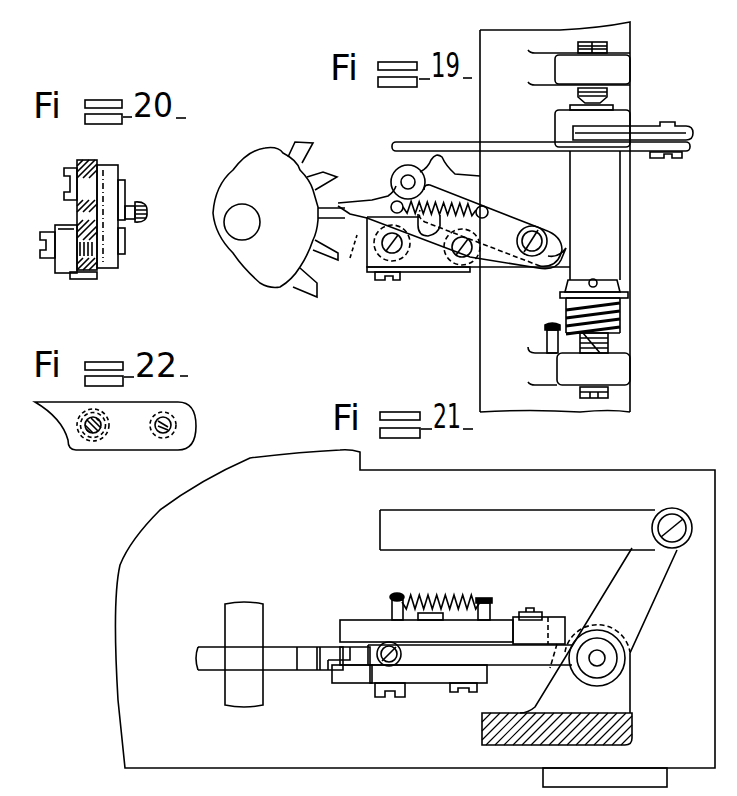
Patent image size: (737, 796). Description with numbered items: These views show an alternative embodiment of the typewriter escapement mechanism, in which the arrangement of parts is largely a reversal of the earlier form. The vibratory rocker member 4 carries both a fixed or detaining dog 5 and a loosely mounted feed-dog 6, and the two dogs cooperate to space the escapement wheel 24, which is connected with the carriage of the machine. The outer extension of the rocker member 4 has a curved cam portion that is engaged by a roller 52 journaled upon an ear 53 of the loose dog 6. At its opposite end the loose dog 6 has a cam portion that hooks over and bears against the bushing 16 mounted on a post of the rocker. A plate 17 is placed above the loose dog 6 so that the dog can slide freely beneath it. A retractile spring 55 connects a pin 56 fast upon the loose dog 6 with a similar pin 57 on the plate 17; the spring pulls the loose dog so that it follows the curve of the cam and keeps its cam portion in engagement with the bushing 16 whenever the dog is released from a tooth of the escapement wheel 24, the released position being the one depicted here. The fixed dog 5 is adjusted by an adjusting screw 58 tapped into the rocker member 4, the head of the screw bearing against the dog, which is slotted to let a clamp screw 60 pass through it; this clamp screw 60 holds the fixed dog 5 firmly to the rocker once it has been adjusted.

In FIG. 19, the vibratory rocker member 4 is at (600, 222).
In FIG. 21, the vibratory rocker member 4 is at (608, 664).
In FIG. 20, the fixed or detaining dog 5 is at (66, 258).
In FIG. 22, the fixed or detaining dog 5 is at (48, 412).
In FIG. 21, the fixed or detaining dog 5 is at (358, 680).
In FIG. 19, the loose or floating feed-dog 6 is at (355, 200).
In FIG. 21, the loose or floating feed-dog 6 is at (358, 622).
In FIG. 21, the bushing 16 is at (520, 633).
In FIG. 19, the cap or anchor member (plate) 17 is at (500, 210).
In FIG. 21, the cap or anchor member (plate) 17 is at (458, 618).
In FIG. 19, the escapement wheel 24 is at (285, 267).
In FIG. 21, the escapement wheel 24 is at (277, 656).
In FIG. 19, the roller 52 is at (409, 166).
In FIG. 20, the roller 52 is at (78, 167).
In FIG. 20, the ear 53 is at (110, 168).
In FIG. 19, the retractile spring 55 is at (442, 225).
In FIG. 20, the retractile spring 55 is at (142, 220).
In FIG. 21, the retractile spring 55 is at (440, 598).
In FIG. 21, the pin 56 is at (394, 596).
In FIG. 21, the pin 57 is at (492, 602).
In FIG. 20, the adjusting screw 58 is at (88, 281).
In FIG. 21, the adjusting screw 58 is at (402, 655).
In FIG. 20, the clamp screw 60 is at (40, 250).
In FIG. 22, the clamp screw 60 is at (95, 433).
In FIG. 21, the clamp screw 60 is at (395, 698).